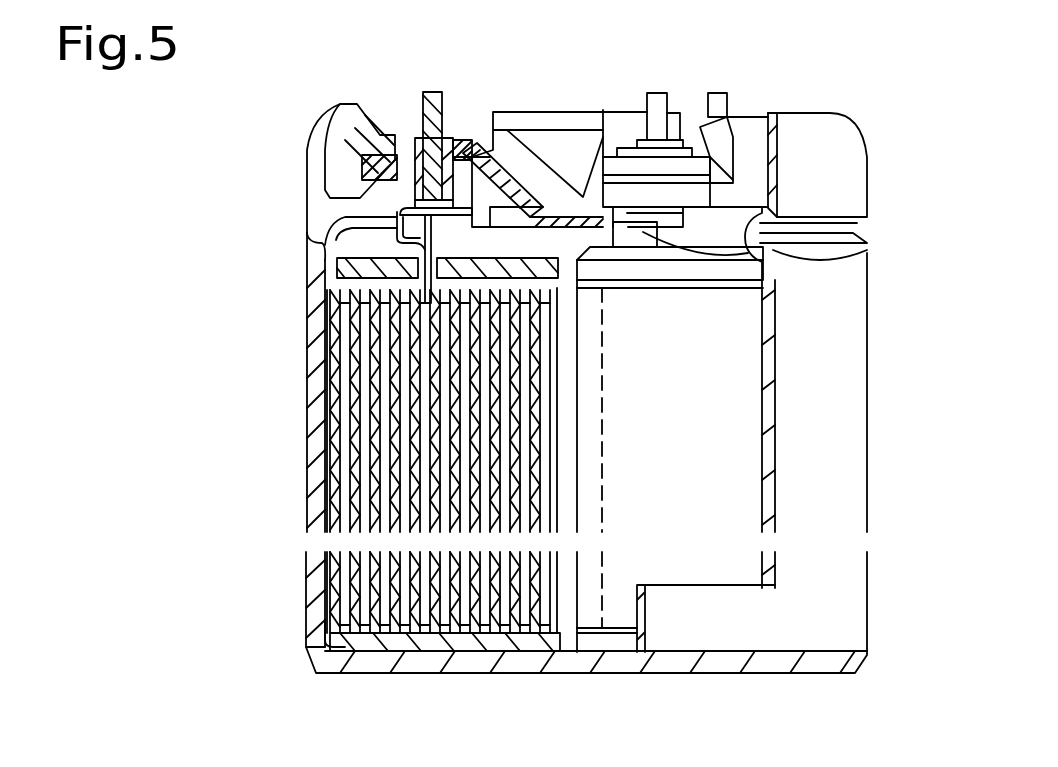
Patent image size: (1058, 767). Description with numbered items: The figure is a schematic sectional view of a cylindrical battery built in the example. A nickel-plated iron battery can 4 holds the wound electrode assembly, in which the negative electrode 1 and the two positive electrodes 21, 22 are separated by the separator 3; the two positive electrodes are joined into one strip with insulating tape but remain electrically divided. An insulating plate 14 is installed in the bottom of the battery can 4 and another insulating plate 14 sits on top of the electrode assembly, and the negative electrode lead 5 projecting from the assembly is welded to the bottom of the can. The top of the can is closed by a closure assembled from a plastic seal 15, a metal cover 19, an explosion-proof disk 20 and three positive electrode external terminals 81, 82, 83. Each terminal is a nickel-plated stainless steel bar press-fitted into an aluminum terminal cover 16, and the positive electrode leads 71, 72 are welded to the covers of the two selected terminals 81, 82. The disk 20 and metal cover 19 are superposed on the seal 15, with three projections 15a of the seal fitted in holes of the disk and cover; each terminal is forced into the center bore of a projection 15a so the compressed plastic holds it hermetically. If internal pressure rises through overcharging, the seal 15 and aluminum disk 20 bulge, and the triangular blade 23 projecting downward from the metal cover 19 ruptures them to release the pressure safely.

The negative electrode 1 is at (323, 433).
The separator 3 is at (313, 627).
The battery can 4 is at (360, 517).
The negative electrode lead 5 is at (320, 655).
The insulating plate 14 is at (345, 268).
The plastic seal 15 is at (335, 178).
The projection 15a is at (470, 157).
The terminal cover 16 is at (420, 135).
The metal cover 19 is at (507, 113).
The explosion-proof disk 20 is at (583, 163).
The positive electrode 21 is at (545, 338).
The positive electrode 22 is at (323, 380).
The triangular blade 23 is at (703, 77).
The positive electrode lead 71 is at (867, 250).
The positive electrode lead 72 is at (323, 237).
The positive electrode external terminal 81 is at (713, 97).
The positive electrode external terminal 82 is at (422, 130).
The positive electrode external terminal 83 is at (728, 97).